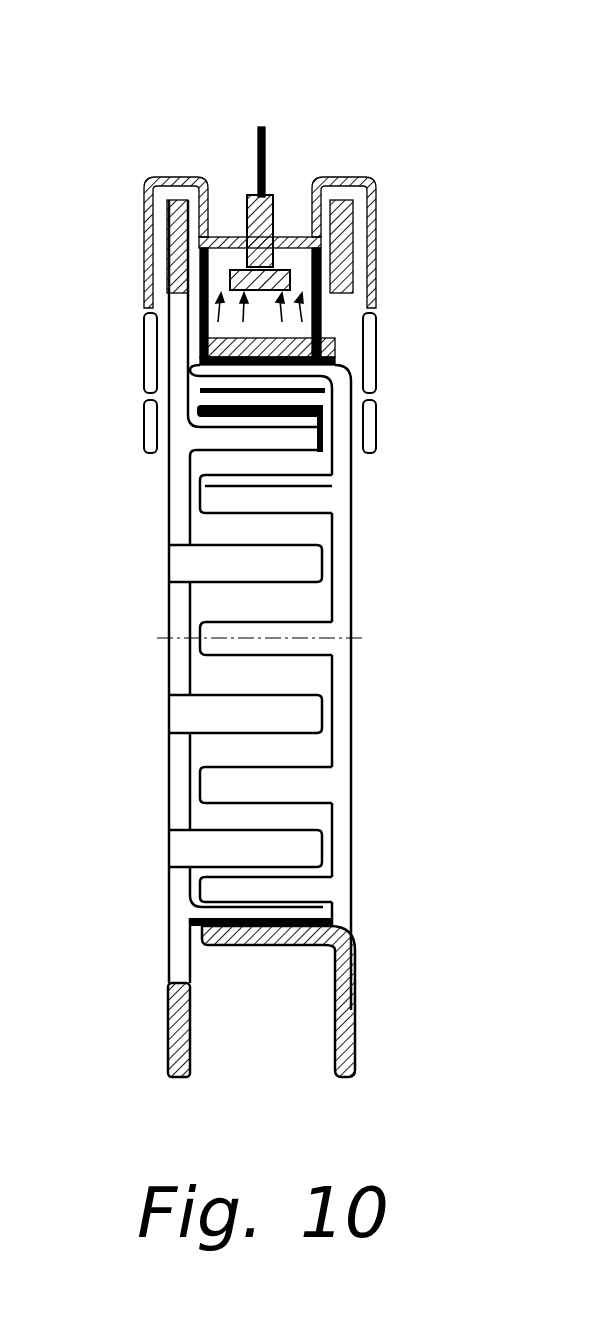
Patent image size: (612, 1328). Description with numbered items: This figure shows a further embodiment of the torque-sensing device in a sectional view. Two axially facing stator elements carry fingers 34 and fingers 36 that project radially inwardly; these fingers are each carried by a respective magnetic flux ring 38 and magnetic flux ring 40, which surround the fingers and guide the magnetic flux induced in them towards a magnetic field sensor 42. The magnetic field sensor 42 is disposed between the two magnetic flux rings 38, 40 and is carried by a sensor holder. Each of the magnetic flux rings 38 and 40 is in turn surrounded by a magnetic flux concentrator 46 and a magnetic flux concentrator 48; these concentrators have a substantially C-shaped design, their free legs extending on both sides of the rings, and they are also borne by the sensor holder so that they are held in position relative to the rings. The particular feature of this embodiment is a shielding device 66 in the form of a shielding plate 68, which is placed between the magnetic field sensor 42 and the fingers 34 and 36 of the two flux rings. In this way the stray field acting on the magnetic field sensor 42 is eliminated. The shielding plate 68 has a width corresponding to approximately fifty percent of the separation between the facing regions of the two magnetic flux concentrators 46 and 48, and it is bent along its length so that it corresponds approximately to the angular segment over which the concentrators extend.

The fingers 34 is at (203, 576).
The fingers 36 is at (303, 652).
The magnetic flux ring 38 is at (167, 498).
The magnetic flux ring 40 is at (353, 552).
The magnetic field sensor 42 is at (243, 200).
The magnetic flux concentrator 46 is at (173, 177).
The magnetic flux concentrator 48 is at (347, 177).
The shielding device 66 is at (296, 145).
The shielding plate 68 is at (285, 270).